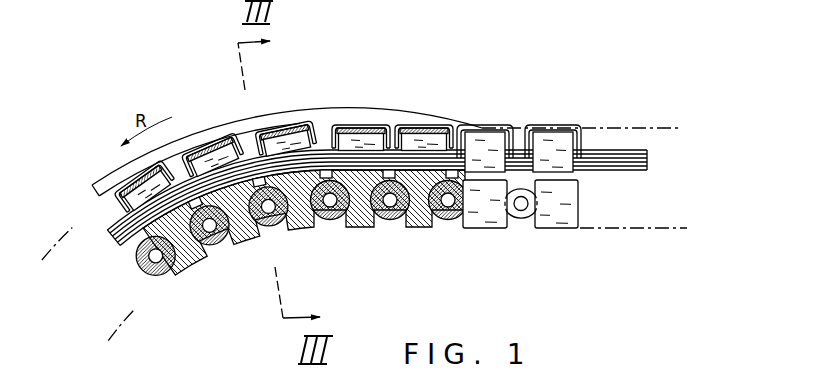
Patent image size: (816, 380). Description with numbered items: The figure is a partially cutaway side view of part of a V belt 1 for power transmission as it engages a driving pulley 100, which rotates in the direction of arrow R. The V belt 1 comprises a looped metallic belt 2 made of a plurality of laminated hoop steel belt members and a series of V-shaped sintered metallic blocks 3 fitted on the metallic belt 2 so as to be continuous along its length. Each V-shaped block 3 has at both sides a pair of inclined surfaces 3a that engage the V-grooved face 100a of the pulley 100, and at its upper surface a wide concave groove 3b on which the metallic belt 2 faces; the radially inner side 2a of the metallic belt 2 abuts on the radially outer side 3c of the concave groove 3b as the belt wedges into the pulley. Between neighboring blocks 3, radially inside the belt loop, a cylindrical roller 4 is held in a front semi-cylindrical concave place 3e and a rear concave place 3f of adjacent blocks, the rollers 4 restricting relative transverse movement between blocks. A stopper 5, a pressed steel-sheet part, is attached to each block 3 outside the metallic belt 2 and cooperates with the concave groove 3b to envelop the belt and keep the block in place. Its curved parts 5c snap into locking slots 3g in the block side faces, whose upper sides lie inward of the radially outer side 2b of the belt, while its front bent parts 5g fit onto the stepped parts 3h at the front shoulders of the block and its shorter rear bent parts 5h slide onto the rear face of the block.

The V belt 1 is at (357, 189).
The metallic belt 2 is at (377, 175).
The radially inner side of metallic belt 2a is at (367, 178).
The radially outer side of metallic belt 2b is at (218, 158).
The V-shaped block 3 is at (334, 194).
The inclined surface 3a is at (565, 222).
The concave groove 3b is at (290, 135).
The radially outer side of concave groove 3c is at (420, 185).
The front roller receiving concave place 3e is at (172, 270).
The rear roller receiving concave place 3f is at (373, 225).
The locking slot 3g is at (516, 222).
The stepped part 3h is at (398, 150).
The cylindrical roller 4 is at (273, 230).
The stopper 5 is at (355, 132).
The curved part 5c is at (580, 185).
The front bent part 5g is at (112, 193).
The rear bent part 5h is at (457, 127).
The driving pulley 100 is at (287, 106).
The V-grooved face 100a is at (328, 114).